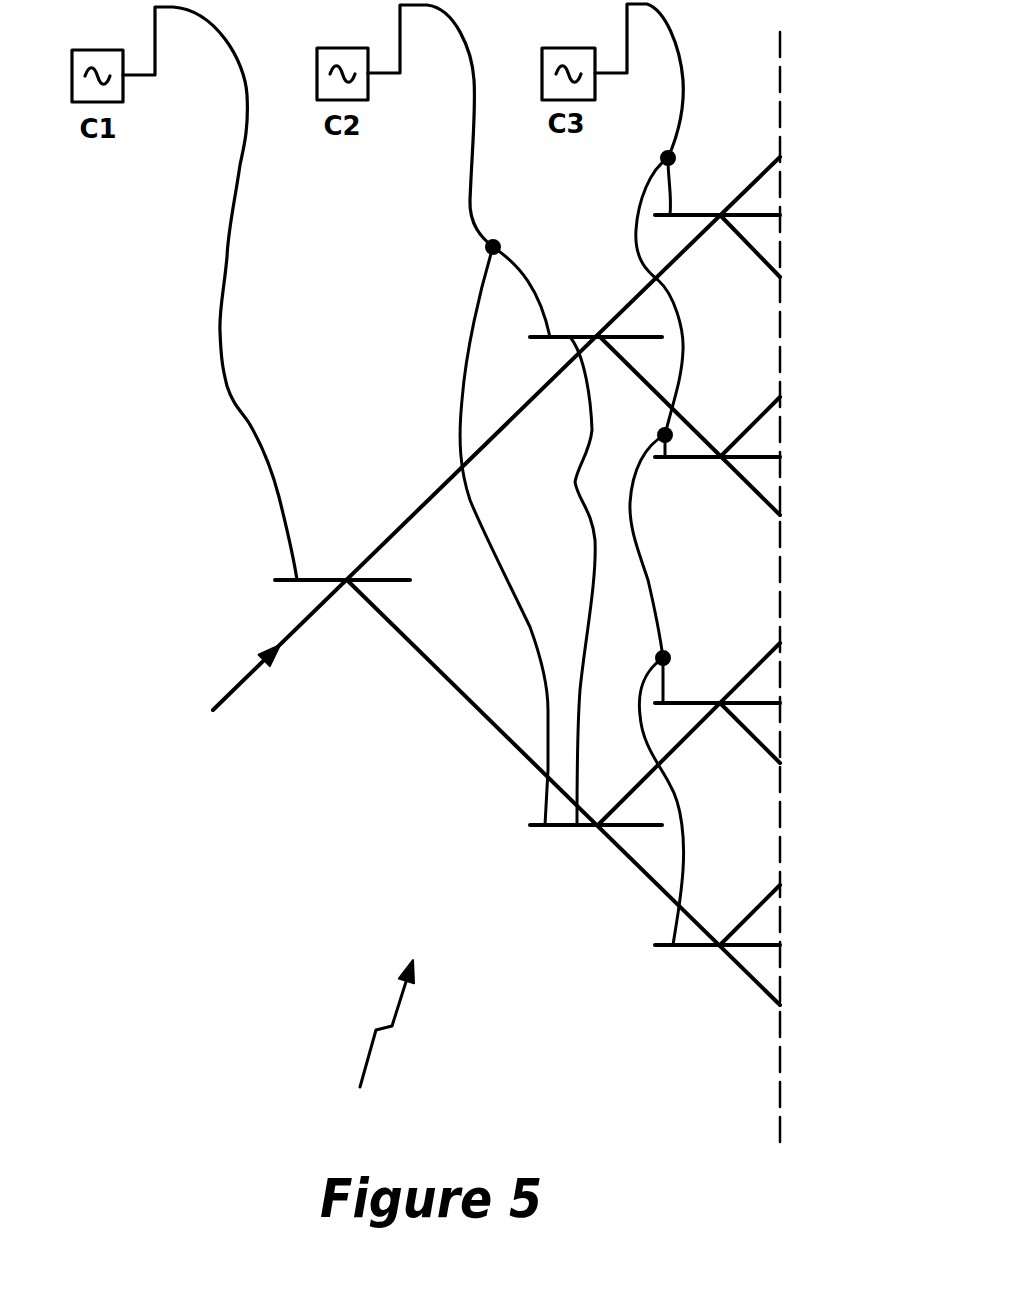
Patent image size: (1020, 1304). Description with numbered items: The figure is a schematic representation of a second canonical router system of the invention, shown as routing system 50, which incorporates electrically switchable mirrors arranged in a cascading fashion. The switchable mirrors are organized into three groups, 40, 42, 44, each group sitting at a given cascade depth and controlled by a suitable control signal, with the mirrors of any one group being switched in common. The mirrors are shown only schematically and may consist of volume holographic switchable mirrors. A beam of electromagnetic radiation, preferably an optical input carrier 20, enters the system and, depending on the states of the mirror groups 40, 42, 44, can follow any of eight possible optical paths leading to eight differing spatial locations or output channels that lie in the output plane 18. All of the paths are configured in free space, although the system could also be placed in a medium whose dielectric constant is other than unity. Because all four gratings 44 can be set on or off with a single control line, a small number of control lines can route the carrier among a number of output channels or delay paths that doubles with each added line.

The output plane 18 is at (782, 1088).
The optical input carrier 20 is at (230, 697).
The switchable mirrors (first group) 40 is at (327, 580).
The switchable mirrors (second group) 42 is at (655, 580).
The switchable mirrors (third group) 44 is at (697, 213).
The routing system 50 is at (374, 1041).